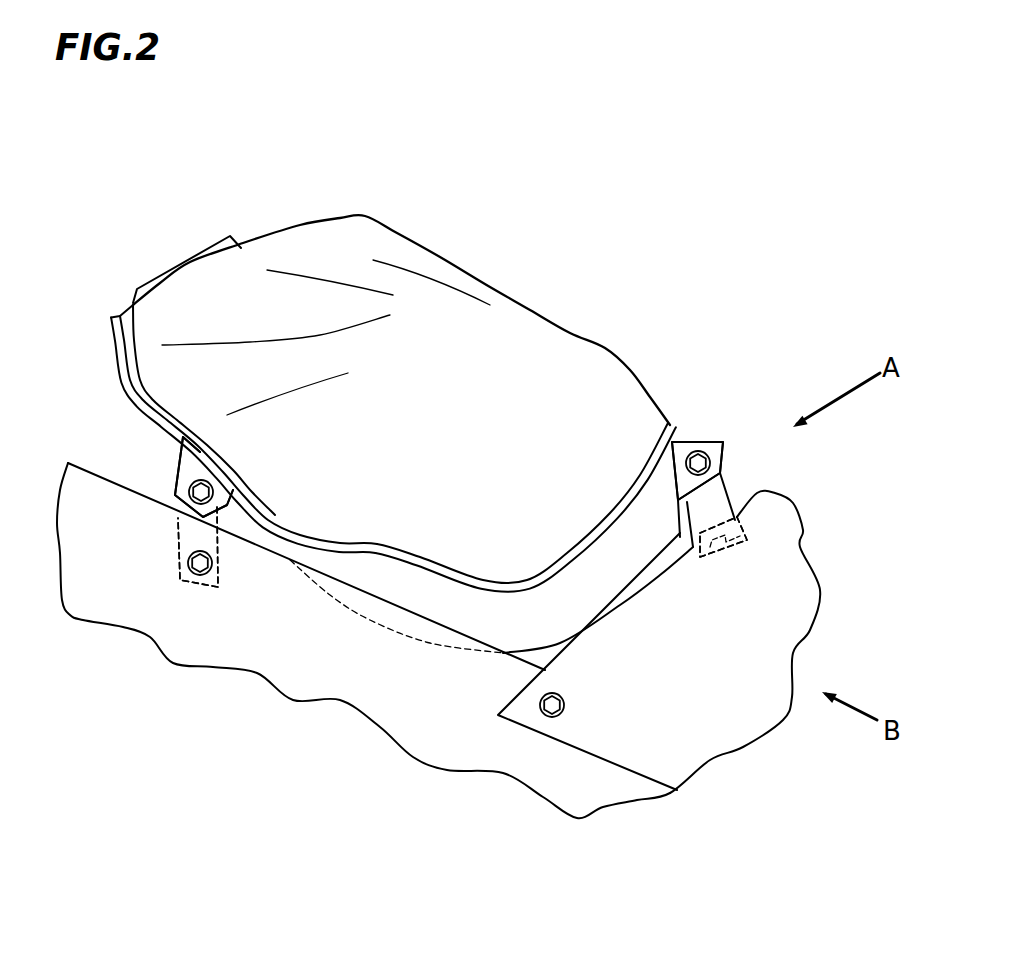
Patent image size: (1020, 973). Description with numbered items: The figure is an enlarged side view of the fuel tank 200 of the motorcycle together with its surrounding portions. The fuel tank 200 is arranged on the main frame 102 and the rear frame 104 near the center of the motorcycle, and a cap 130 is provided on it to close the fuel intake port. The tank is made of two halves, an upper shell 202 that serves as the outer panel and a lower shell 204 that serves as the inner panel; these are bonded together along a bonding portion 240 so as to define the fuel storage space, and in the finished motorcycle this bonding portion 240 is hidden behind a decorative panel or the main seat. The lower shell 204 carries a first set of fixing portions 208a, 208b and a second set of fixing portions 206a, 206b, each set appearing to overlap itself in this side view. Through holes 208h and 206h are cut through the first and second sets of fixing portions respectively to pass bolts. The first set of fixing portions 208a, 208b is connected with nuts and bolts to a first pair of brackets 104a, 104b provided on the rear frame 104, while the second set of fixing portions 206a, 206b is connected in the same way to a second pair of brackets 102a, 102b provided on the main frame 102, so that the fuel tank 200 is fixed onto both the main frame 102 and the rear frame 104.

The fuel tank 200 is at (566, 177).
The upper shell 202 is at (390, 233).
The lower shell 204 is at (115, 340).
The bonding portion 240 is at (607, 517).
The cap 130 is at (170, 273).
The fixing portion 206a is at (200, 450).
The fixing portion 206b is at (204, 477).
The through hole 206h is at (193, 487).
The fixing portion 208a is at (718, 457).
The fixing portion 208b is at (697, 471).
The through hole 208h is at (693, 455).
The main frame 102 is at (157, 592).
The bracket 102a is at (177, 513).
The bracket 102b is at (198, 547).
The rear frame 104 is at (687, 745).
The bracket 104a is at (727, 483).
The bracket 104b is at (723, 537).